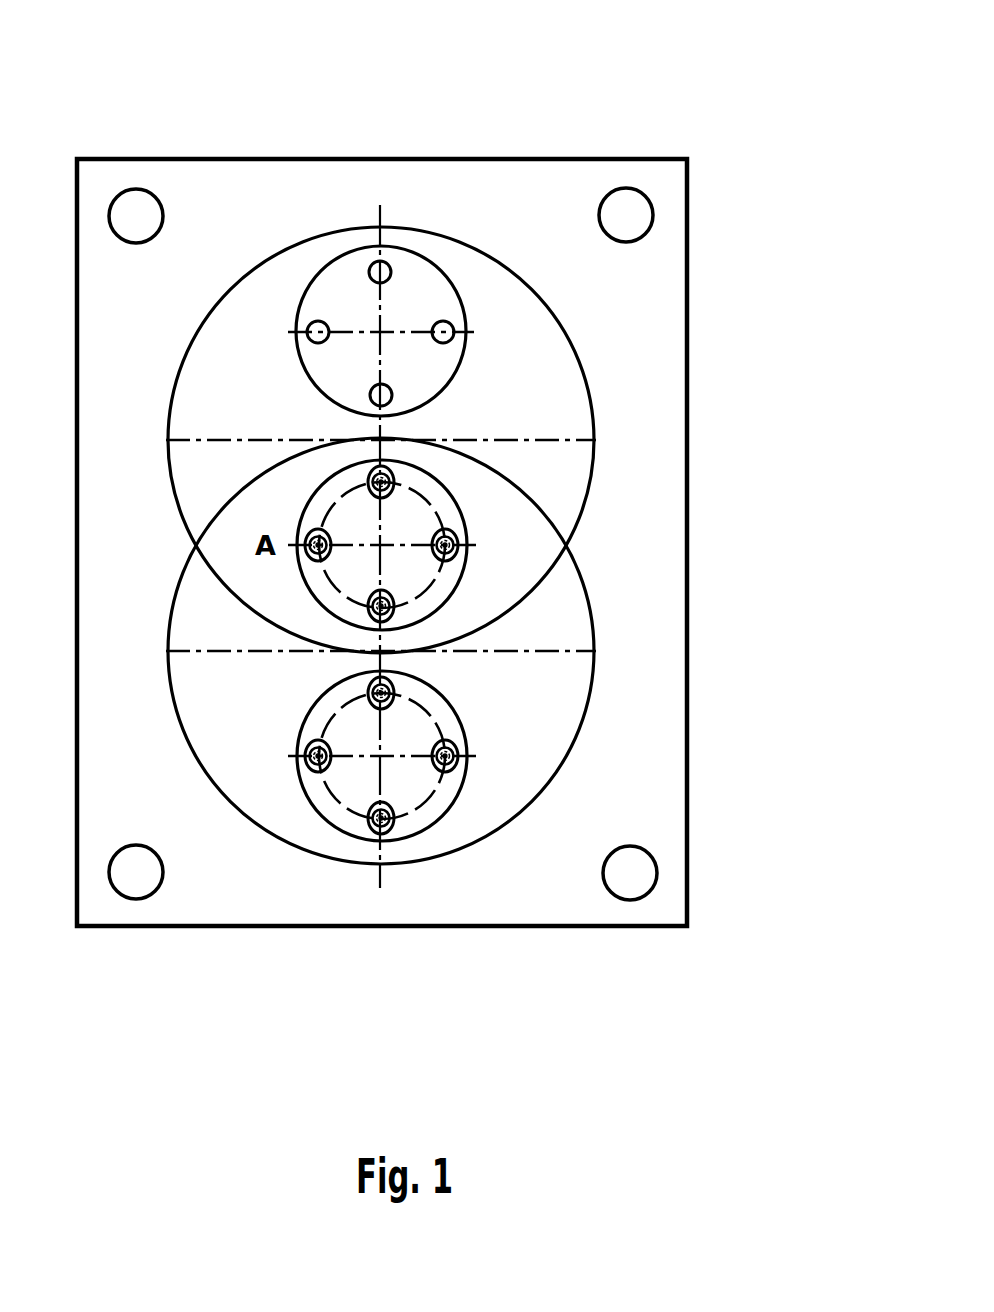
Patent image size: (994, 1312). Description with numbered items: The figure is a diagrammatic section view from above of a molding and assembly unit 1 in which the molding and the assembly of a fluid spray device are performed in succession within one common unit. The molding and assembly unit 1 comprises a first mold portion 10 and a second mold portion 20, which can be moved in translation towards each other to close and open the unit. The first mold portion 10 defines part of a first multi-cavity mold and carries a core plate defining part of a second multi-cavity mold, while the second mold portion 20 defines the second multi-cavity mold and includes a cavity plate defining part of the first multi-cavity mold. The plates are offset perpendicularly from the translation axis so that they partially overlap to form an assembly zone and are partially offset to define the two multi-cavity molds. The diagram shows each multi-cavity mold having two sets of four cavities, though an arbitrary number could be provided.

The molding and assembly unit 1 is at (575, 158).
The first mold portion 10 is at (549, 366).
The second mold portion 20 is at (558, 700).